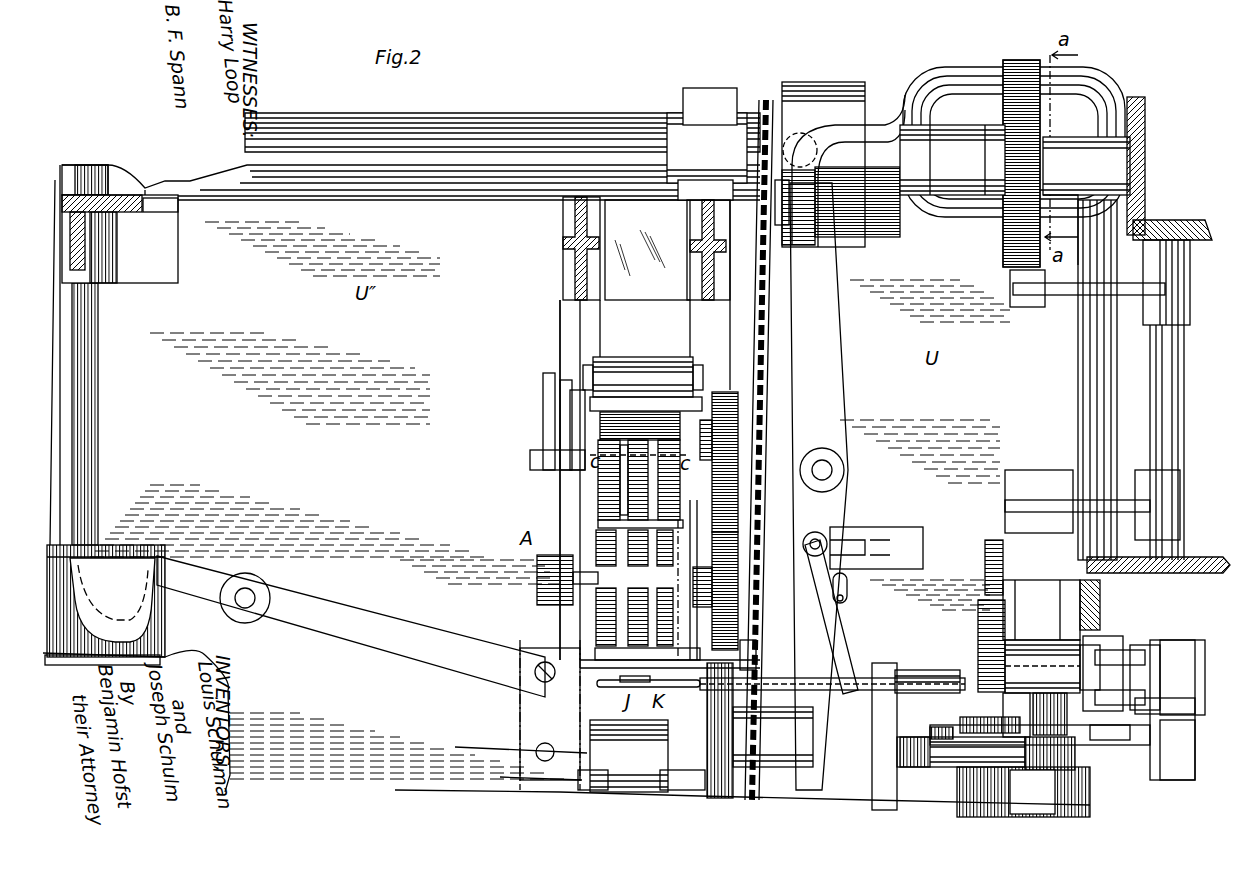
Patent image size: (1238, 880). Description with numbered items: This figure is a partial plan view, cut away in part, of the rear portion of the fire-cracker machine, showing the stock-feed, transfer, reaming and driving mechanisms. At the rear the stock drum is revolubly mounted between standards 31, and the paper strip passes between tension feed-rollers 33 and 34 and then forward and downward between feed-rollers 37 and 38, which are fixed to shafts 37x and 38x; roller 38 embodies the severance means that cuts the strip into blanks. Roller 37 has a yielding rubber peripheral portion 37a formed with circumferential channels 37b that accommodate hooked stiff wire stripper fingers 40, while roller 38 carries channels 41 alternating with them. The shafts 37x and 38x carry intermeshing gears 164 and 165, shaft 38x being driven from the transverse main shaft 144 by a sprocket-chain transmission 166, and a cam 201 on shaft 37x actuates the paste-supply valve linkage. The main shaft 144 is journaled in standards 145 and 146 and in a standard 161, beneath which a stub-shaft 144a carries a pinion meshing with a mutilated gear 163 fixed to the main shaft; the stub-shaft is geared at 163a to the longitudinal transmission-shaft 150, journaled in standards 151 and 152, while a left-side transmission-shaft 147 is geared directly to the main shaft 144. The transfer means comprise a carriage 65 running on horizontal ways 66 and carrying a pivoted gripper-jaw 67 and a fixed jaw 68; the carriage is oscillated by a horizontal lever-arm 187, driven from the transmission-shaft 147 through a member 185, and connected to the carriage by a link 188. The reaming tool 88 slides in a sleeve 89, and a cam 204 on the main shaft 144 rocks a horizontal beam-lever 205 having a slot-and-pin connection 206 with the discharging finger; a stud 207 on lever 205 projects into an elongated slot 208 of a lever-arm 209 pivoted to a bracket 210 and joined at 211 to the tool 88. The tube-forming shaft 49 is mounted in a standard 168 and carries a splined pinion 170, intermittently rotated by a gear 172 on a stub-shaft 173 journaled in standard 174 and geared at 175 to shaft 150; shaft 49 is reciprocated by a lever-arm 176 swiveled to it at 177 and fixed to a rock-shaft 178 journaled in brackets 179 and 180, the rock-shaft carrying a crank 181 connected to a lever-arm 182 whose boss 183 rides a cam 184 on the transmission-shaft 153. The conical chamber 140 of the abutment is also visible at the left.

The main or power shaft 144 is at (538, 135).
The standard 146 is at (712, 100).
The sprocket-chain transmission 166 is at (771, 400).
The horizontal beam-lever 205 is at (843, 436).
The cam 204 is at (855, 236).
The mutilated gear 163 is at (1050, 97).
The standard 161 is at (952, 160).
The stub-shaft 144a is at (1092, 140).
The gearing 163a is at (1148, 215).
The longitudinal transmission-shaft 150 is at (1153, 412).
The standard 151 is at (1053, 297).
The standard 152 is at (1040, 497).
The lever-arm 209 is at (832, 538).
The bracket 210 is at (878, 540).
The slot-and-pin connection 211 is at (863, 668).
The stud 207 is at (848, 588).
The elongated slot 208 is at (846, 605).
The slot-and-pin connection 206 is at (840, 770).
The gear 172 is at (985, 577).
The standard 174 is at (1041, 610).
The gearing 175 is at (1095, 577).
The stub-shaft 173 is at (1105, 622).
The pinion 170 is at (978, 652).
The standard 168 is at (1025, 682).
The pivotal swivel connection 177 is at (1130, 652).
The bracket 179 is at (1170, 657).
The lever-arm 176 is at (1205, 670).
The bracket 180 is at (1122, 706).
The boss 183 is at (1040, 724).
The lever-arm 182 is at (1106, 740).
The rock-shaft 178 is at (1170, 732).
The crank 181 is at (1185, 748).
The cam 184 is at (940, 765).
The longitudinal transmission-shaft 153 is at (1023, 792).
The sleeve 89 is at (832, 691).
The conical chamber 140 is at (760, 730).
The shaft 49 is at (755, 652).
The gear 164 is at (740, 467).
The gear 165 is at (740, 552).
The shaft 37x is at (718, 440).
The tension feed-roller 33 is at (652, 378).
The tension feed-roller 34 is at (706, 403).
The annular channels or grooves 37b is at (640, 426).
The feed-roller 37 is at (600, 480).
The yielding peripheral portion 37a is at (672, 472).
The strippers 40 is at (648, 520).
The annular channels or grooves 41 is at (598, 522).
The shaft 38x is at (705, 592).
The feed-roller 38 is at (570, 606).
The cam 201 is at (545, 402).
The standards 31 is at (680, 265).
The cylindrical tool 88 is at (640, 679).
The ways 66 is at (645, 699).
The gripper-jaw 67 is at (629, 756).
The gripper-jaw 68 is at (648, 788).
The link 188 is at (538, 724).
The carriage 65 is at (742, 771).
The lever-arm 187 is at (345, 624).
The bracket 185 is at (140, 554).
The longitudinal transmission-shaft 147 is at (98, 412).
The standard 145 is at (136, 283).